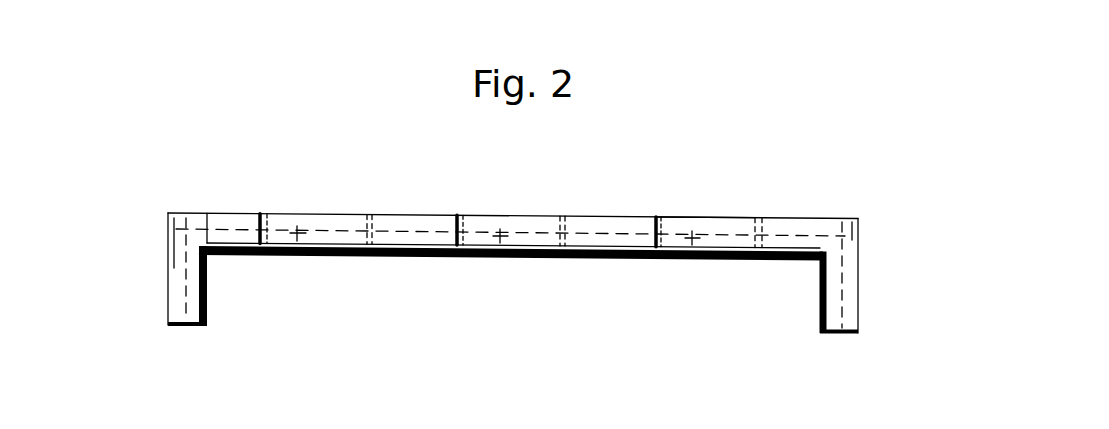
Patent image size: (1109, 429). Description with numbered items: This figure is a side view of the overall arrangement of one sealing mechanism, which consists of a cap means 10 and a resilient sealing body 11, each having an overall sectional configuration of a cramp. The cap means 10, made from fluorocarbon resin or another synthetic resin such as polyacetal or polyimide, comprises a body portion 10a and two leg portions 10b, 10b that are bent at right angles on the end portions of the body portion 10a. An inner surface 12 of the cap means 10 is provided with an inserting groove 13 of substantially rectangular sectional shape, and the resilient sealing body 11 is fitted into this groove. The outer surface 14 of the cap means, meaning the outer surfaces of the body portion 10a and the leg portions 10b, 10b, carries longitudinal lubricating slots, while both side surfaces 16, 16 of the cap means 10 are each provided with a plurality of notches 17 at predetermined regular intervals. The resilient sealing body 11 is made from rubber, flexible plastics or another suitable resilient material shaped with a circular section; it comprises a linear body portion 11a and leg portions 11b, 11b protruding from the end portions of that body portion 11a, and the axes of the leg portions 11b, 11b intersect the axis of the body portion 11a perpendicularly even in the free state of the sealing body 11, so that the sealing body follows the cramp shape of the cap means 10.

The cap means 10 is at (510, 250).
The body portion 10a is at (700, 218).
The leg portions 10b is at (167, 298).
The resilient sealing body 11 is at (511, 299).
The linear body portion 11a is at (434, 258).
The leg portions 11b is at (206, 297).
The inner surface 12 is at (508, 250).
The inserting groove 13 is at (430, 227).
The outer surface 14 is at (837, 218).
The side surfaces 16 is at (717, 244).
The notches 17 is at (268, 221).